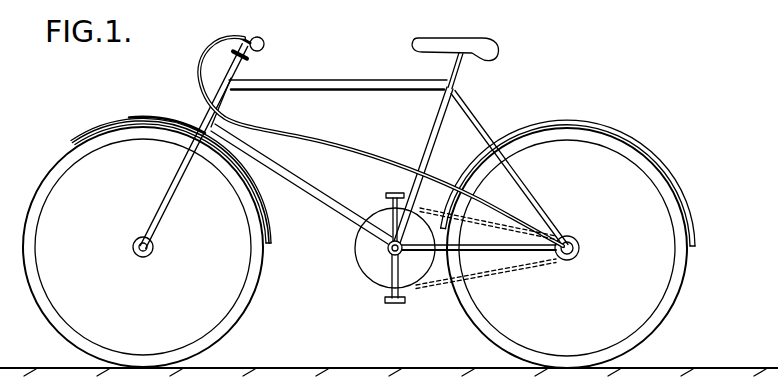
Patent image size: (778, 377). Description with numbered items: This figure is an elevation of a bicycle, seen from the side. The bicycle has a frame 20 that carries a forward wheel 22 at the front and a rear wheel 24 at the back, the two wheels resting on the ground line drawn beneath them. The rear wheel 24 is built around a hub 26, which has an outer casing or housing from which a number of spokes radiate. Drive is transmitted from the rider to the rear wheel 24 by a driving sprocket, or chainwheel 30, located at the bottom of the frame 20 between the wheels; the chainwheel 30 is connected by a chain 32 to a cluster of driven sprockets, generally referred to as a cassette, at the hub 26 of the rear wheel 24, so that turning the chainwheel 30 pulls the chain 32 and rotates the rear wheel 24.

The frame 20 is at (433, 119).
The forward wheel 22 is at (48, 205).
The rear wheel 24 is at (683, 277).
The hub 26 is at (572, 236).
The driving sprocket or chainwheel 30 is at (353, 262).
The chain 32 is at (523, 270).